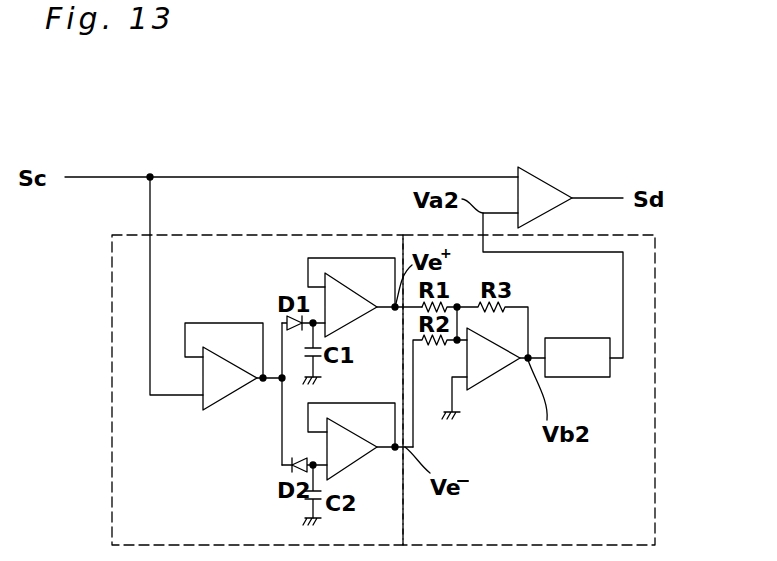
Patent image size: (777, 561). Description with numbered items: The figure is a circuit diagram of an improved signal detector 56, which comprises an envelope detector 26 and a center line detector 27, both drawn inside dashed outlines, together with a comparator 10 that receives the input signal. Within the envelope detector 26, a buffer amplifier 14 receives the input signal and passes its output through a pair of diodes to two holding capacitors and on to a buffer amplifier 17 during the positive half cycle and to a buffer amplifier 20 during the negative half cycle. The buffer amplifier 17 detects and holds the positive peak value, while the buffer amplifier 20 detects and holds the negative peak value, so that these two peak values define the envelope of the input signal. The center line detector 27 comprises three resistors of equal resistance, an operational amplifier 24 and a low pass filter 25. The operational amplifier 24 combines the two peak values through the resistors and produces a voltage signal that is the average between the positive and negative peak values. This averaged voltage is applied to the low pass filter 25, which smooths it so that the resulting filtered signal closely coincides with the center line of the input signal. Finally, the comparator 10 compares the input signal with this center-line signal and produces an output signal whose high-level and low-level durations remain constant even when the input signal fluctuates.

The comparator 10 is at (548, 183).
The buffer amplifier 14 is at (230, 397).
The buffer amplifier 17 is at (358, 312).
The buffer amplifier 20 is at (357, 455).
The operational amplifier 24 is at (493, 372).
The low pass filter 25 is at (588, 338).
The envelope detector 26 is at (112, 398).
The center line detector 27 is at (655, 372).
The improved signal detector 56 is at (440, 153).